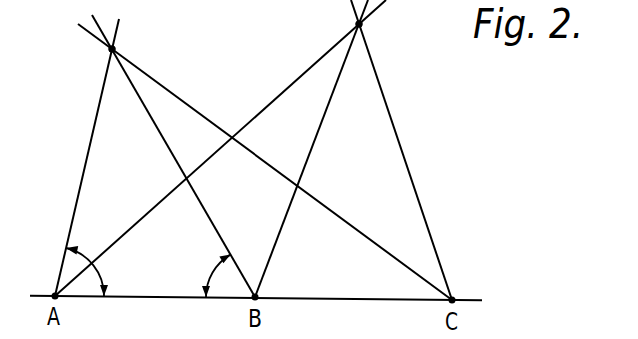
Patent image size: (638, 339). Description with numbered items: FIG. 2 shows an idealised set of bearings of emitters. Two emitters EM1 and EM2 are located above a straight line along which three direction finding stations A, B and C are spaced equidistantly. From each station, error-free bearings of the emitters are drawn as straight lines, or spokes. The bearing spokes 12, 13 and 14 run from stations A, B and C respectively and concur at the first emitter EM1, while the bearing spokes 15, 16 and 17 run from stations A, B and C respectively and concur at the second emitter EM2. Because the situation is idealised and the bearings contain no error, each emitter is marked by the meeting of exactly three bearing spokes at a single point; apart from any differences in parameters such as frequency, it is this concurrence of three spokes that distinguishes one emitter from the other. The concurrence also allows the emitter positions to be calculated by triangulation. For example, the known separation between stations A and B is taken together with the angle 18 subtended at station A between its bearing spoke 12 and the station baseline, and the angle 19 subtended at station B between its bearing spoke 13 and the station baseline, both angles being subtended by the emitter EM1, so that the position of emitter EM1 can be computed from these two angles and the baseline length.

The bearing spoke 12 is at (80, 185).
The bearing spoke 13 is at (212, 221).
The bearing spoke 14 is at (341, 216).
The bearing spoke 15 is at (140, 219).
The bearing spoke 16 is at (277, 243).
The bearing spoke 17 is at (431, 235).
The angle subtended at station A 18 is at (98, 272).
The angle subtended at station B 19 is at (218, 262).
The emitter EM1 is at (118, 44).
The emitter EM2 is at (365, 25).